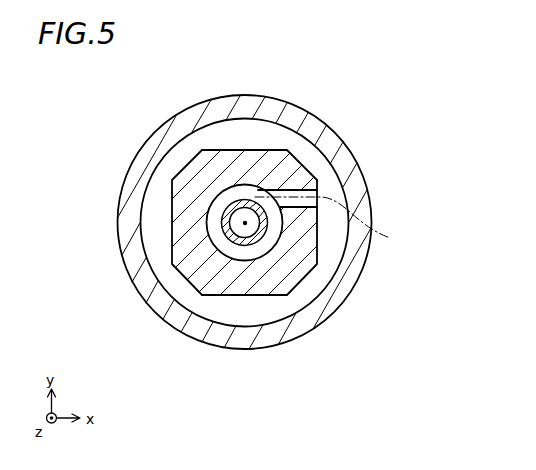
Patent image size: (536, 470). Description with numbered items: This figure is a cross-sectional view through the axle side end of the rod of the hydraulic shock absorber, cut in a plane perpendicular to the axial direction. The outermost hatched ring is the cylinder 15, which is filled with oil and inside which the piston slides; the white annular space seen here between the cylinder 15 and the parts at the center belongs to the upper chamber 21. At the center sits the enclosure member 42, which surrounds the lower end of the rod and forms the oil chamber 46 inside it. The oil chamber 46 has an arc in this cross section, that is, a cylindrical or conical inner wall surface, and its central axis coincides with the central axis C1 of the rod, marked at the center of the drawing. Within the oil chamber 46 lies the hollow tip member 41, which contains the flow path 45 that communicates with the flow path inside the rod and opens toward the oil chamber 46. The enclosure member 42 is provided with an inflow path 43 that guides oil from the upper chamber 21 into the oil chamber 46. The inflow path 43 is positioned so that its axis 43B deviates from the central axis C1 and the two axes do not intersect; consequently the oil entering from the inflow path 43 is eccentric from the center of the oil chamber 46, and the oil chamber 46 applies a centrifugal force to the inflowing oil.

The cylinder 15 is at (332, 143).
The upper chamber 21 is at (312, 294).
The tip member 41 is at (306, 253).
The enclosure member 42 is at (286, 155).
The inflow path 43 is at (322, 191).
The axis of the inflow path 43B is at (340, 223).
The flow path 45 is at (221, 232).
The oil chamber 46 is at (243, 186).
The central axis C1 is at (245, 223).